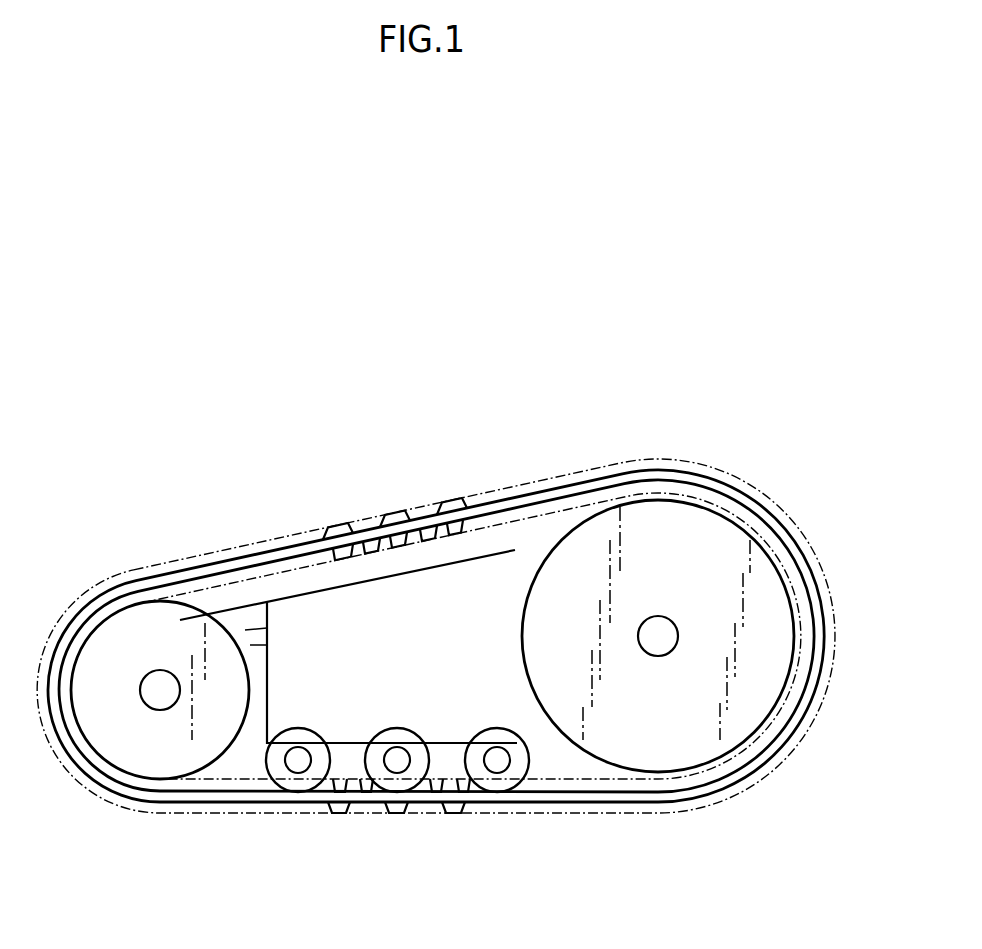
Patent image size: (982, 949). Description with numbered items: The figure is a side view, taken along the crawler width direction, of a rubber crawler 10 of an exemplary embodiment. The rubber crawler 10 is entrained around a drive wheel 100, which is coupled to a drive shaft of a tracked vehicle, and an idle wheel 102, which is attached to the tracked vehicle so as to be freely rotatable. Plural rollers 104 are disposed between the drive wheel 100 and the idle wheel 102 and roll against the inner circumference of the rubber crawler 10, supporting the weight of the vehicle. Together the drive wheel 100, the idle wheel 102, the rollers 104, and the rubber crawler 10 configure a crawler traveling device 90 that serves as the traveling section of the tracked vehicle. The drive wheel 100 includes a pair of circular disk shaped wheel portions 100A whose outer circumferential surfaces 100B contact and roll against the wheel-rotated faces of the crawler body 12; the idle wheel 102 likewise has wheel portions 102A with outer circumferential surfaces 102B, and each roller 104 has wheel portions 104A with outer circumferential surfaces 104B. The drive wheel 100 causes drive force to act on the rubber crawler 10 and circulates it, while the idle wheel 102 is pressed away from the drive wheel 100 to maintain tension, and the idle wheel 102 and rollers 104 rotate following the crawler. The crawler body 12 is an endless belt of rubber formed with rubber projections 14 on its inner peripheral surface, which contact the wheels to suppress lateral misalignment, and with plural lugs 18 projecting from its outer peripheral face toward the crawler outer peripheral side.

The crawler traveling device 90 is at (196, 380).
The rubber crawler 10 is at (598, 472).
The crawler body 12 is at (480, 506).
The rubber projections 14 is at (337, 558).
The lugs 18 is at (392, 511).
The drive wheel 100 is at (503, 608).
The wheel portions 100A is at (567, 560).
The outer circumferential surfaces 100B is at (563, 763).
The idle wheel 102 is at (258, 640).
The wheel portions 102A is at (172, 622).
The outer circumferential surfaces 102B is at (243, 753).
The rollers 104 is at (316, 726).
The wheel portions 104A is at (297, 775).
The outer circumferential surfaces 104B is at (329, 757).